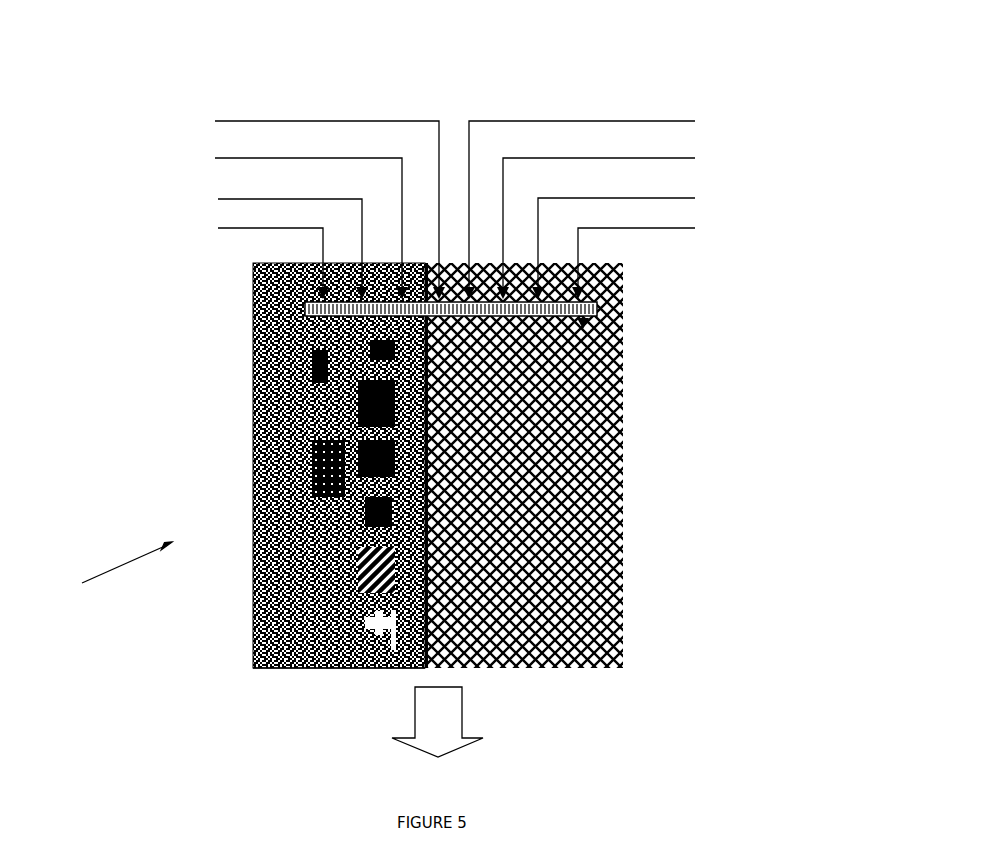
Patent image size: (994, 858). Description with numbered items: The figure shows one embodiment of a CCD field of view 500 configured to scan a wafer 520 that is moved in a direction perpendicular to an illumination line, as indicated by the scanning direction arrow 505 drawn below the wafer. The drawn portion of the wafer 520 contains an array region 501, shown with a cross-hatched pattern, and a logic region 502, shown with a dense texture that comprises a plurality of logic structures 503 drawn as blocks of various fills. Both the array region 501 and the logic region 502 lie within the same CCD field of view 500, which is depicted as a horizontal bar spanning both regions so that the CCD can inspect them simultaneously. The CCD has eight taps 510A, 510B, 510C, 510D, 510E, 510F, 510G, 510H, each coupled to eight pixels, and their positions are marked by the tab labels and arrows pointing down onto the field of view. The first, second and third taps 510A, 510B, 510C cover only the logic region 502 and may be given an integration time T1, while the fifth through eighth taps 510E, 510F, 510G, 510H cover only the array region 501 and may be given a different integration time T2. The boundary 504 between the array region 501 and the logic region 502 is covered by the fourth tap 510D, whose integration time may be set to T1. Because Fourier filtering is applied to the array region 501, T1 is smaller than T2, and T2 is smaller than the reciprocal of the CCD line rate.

The CCD field of view 500 is at (588, 324).
The array region 501 is at (620, 433).
The logic region 502 is at (253, 627).
The logic structures 503 is at (255, 453).
The boundary 504 is at (420, 668).
The scanning direction arrow 505 is at (518, 722).
The first tap 510A is at (253, 293).
The second tap 510B is at (343, 265).
The third tap 510C is at (388, 265).
The fourth tap 510D is at (451, 263).
The fifth tap 510E is at (483, 258).
The sixth tap 510F is at (518, 262).
The seventh tap 510G is at (557, 260).
The eighth tap 510H is at (597, 265).
The wafer 520 is at (106, 570).